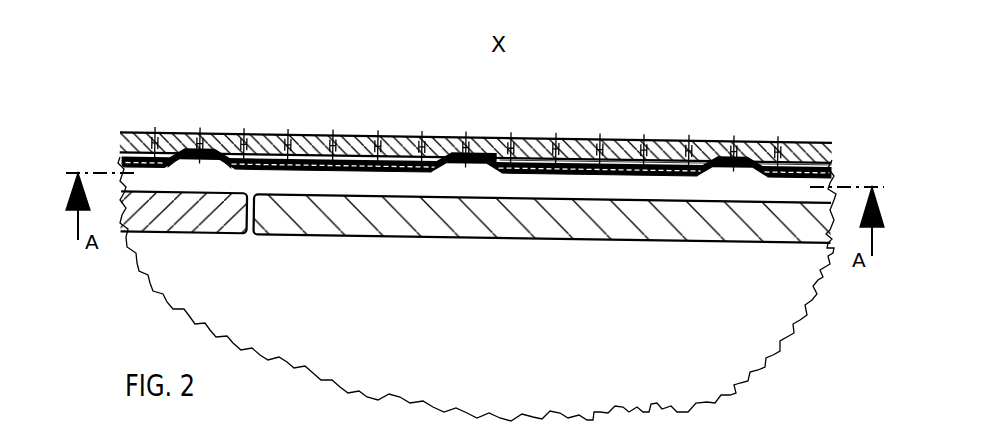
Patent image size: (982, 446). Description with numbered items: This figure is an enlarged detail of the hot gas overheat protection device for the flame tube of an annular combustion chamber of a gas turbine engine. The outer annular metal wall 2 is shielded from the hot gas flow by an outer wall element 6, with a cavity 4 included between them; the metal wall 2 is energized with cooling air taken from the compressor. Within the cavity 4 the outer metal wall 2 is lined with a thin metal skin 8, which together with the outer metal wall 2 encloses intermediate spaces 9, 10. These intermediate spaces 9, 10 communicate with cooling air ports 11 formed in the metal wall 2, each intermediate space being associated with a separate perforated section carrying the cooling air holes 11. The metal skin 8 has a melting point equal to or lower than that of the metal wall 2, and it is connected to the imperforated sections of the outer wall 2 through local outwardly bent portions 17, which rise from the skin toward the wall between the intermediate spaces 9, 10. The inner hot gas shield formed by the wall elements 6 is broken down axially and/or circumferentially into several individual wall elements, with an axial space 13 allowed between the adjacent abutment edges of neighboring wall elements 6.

The outer annular metal wall 2 is at (257, 135).
The cavity 4 is at (758, 189).
The outer wall element 6 is at (418, 223).
The metal skin 8 is at (400, 172).
The intermediate space 9 is at (358, 160).
The intermediate space 10 is at (623, 164).
The cooling air ports 11 is at (422, 132).
The axial space 13 is at (252, 216).
The outwardly bent portion 17 is at (200, 156).